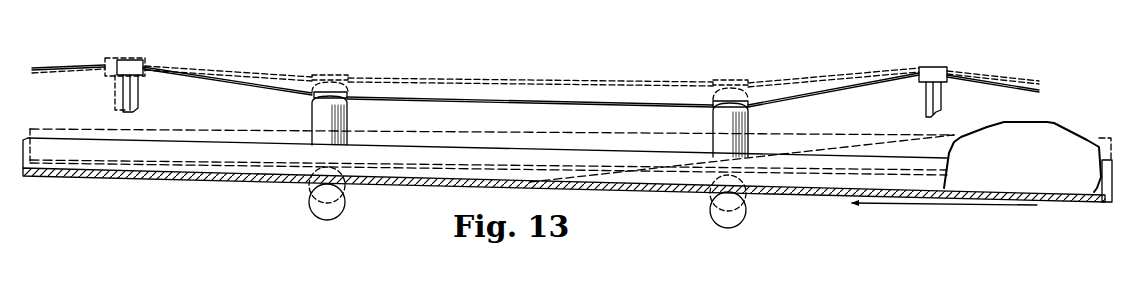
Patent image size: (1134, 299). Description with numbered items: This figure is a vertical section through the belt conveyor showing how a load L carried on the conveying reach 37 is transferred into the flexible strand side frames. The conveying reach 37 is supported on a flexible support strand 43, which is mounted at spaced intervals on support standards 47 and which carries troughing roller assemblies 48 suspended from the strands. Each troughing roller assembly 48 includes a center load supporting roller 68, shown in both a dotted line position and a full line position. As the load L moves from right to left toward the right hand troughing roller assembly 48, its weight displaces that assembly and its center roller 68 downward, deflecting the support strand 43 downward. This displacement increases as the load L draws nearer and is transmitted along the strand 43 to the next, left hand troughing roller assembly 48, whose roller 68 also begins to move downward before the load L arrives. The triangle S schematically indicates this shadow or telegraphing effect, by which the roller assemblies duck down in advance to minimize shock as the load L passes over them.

The conveying reach 37 is at (567, 167).
The flexible support strand 43 is at (412, 98).
The support standard 47 is at (143, 62).
The troughing roller assembly 48 is at (310, 120).
The center load supporting roller 68 is at (309, 205).
The shadow triangle S is at (842, 146).
The load L is at (1056, 123).